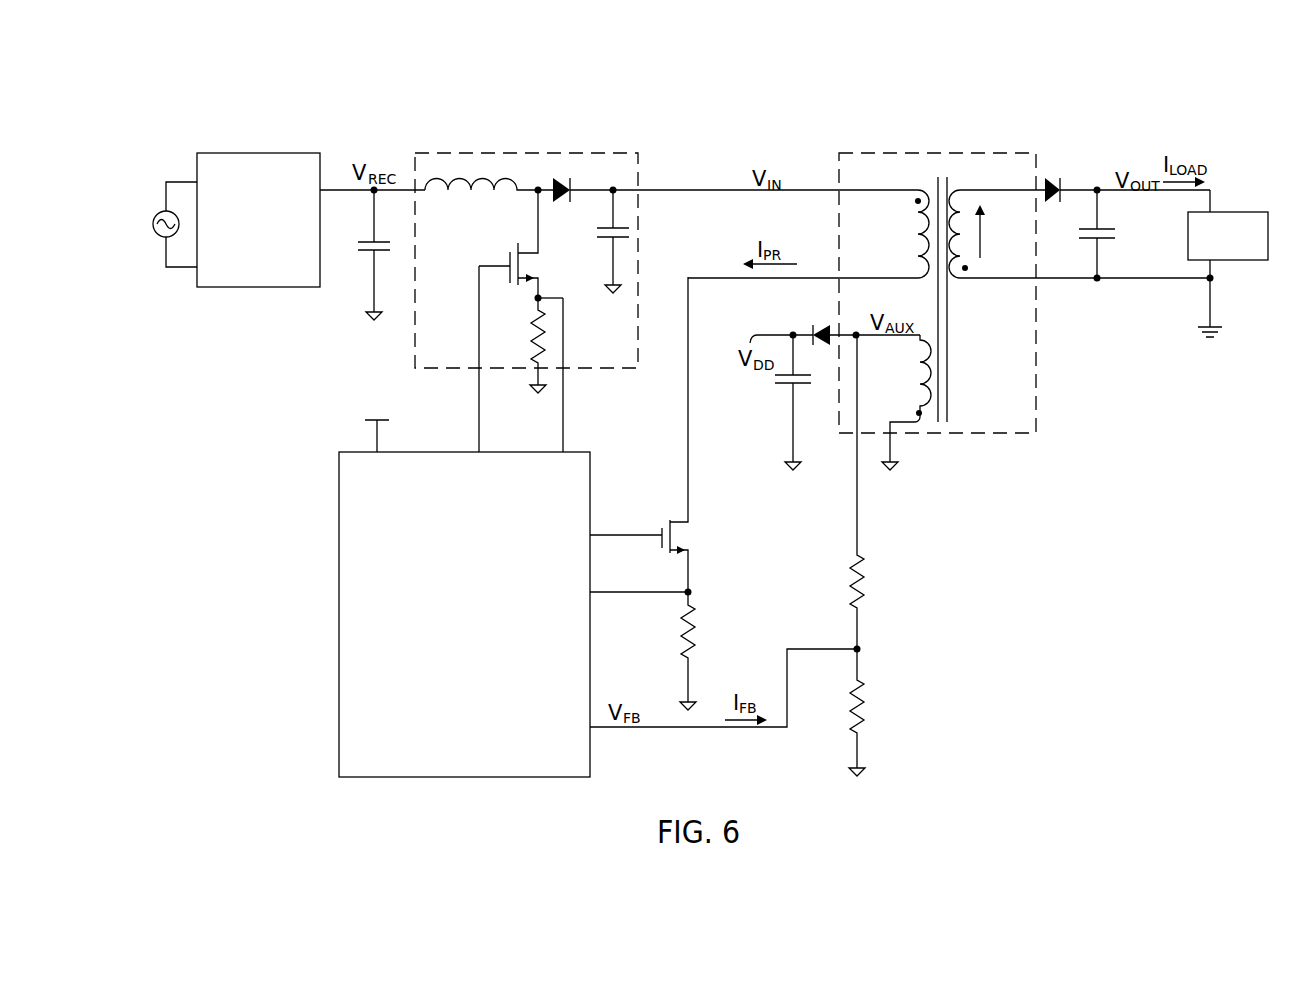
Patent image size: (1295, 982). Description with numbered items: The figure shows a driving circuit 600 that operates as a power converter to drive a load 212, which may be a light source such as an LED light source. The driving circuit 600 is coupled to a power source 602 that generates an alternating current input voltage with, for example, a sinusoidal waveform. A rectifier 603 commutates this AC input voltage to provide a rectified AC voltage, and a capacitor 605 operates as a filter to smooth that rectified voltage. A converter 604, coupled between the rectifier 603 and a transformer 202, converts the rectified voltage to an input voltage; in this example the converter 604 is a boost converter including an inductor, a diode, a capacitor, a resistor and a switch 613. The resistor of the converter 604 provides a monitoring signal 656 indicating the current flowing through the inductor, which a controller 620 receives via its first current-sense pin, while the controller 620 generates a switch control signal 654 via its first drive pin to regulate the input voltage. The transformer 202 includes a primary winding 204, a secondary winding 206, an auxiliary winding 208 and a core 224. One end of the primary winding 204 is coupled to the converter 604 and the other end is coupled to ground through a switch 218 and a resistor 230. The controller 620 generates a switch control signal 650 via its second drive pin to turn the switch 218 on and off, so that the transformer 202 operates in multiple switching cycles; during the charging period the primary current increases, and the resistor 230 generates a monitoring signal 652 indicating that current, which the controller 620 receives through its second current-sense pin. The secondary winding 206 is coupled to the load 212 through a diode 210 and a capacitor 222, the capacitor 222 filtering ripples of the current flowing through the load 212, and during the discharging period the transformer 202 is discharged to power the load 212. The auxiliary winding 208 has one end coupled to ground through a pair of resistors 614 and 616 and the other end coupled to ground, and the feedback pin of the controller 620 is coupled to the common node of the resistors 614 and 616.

The driving circuit 600 is at (200, 86).
The power source 602 is at (158, 216).
The rectifier 603 is at (276, 248).
The capacitor 605 is at (367, 248).
The converter 604 is at (525, 153).
The switch 613 is at (505, 262).
The switch control signal 654 is at (477, 425).
The monitoring signal 656 is at (562, 425).
The controller 620 is at (456, 677).
The switch control signal 650 is at (650, 532).
The monitoring signal 652 is at (650, 590).
The switch 218 is at (675, 543).
The resistor 230 is at (696, 647).
The resistor 614 is at (850, 596).
The resistor 616 is at (850, 721).
The transformer 202 is at (878, 153).
The core 224 is at (937, 184).
The primary winding 204 is at (920, 257).
The secondary winding 206 is at (960, 190).
The auxiliary winding 208 is at (920, 400).
The diode 210 is at (1060, 190).
The capacitor 222 is at (1108, 231).
The load 212 is at (1244, 212).